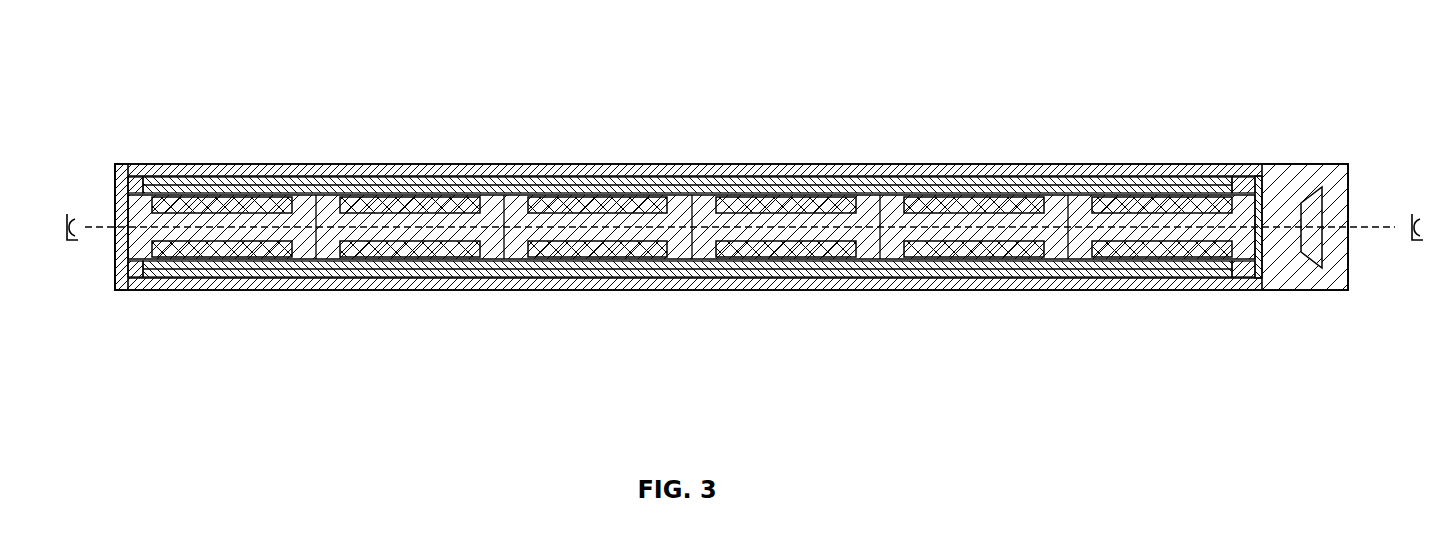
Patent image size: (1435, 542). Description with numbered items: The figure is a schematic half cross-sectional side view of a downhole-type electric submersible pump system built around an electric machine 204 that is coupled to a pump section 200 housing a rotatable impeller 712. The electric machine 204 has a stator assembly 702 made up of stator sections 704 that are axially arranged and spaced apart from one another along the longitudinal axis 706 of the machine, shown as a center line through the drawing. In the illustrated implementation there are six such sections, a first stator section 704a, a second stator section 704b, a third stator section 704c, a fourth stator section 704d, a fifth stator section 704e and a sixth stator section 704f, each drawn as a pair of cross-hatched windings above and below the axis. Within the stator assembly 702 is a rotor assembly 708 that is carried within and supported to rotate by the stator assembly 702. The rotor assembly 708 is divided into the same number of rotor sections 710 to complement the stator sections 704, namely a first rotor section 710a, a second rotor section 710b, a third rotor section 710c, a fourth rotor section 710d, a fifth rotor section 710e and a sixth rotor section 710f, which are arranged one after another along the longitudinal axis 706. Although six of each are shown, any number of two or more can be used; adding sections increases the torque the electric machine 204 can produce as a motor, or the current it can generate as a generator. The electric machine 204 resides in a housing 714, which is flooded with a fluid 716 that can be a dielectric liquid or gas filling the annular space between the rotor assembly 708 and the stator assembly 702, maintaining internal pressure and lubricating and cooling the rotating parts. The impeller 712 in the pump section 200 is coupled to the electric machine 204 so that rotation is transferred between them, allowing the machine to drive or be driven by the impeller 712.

The pump section 200 is at (1300, 133).
The electric machine 204 is at (650, 112).
The stator assembly 702 is at (918, 112).
The stator sections 704 is at (340, 381).
The first stator section 704a is at (152, 300).
The second stator section 704b is at (340, 300).
The third stator section 704c is at (528, 300).
The fourth stator section 704d is at (716, 300).
The fifth stator section 704e is at (904, 300).
The sixth stator section 704f is at (1092, 300).
The longitudinal axis 706 is at (1364, 229).
The rotor assembly 708 is at (805, 228).
The rotor sections 710 is at (317, 78).
The first rotor section 710a is at (317, 155).
The second rotor section 710b is at (317, 155).
The third rotor section 710c is at (505, 155).
The fourth rotor section 710d is at (880, 163).
The fifth rotor section 710e is at (880, 155).
The sixth rotor section 710f is at (1068, 155).
The impeller 712 is at (1313, 266).
The housing 714 is at (115, 283).
The fluid 716 is at (683, 186).